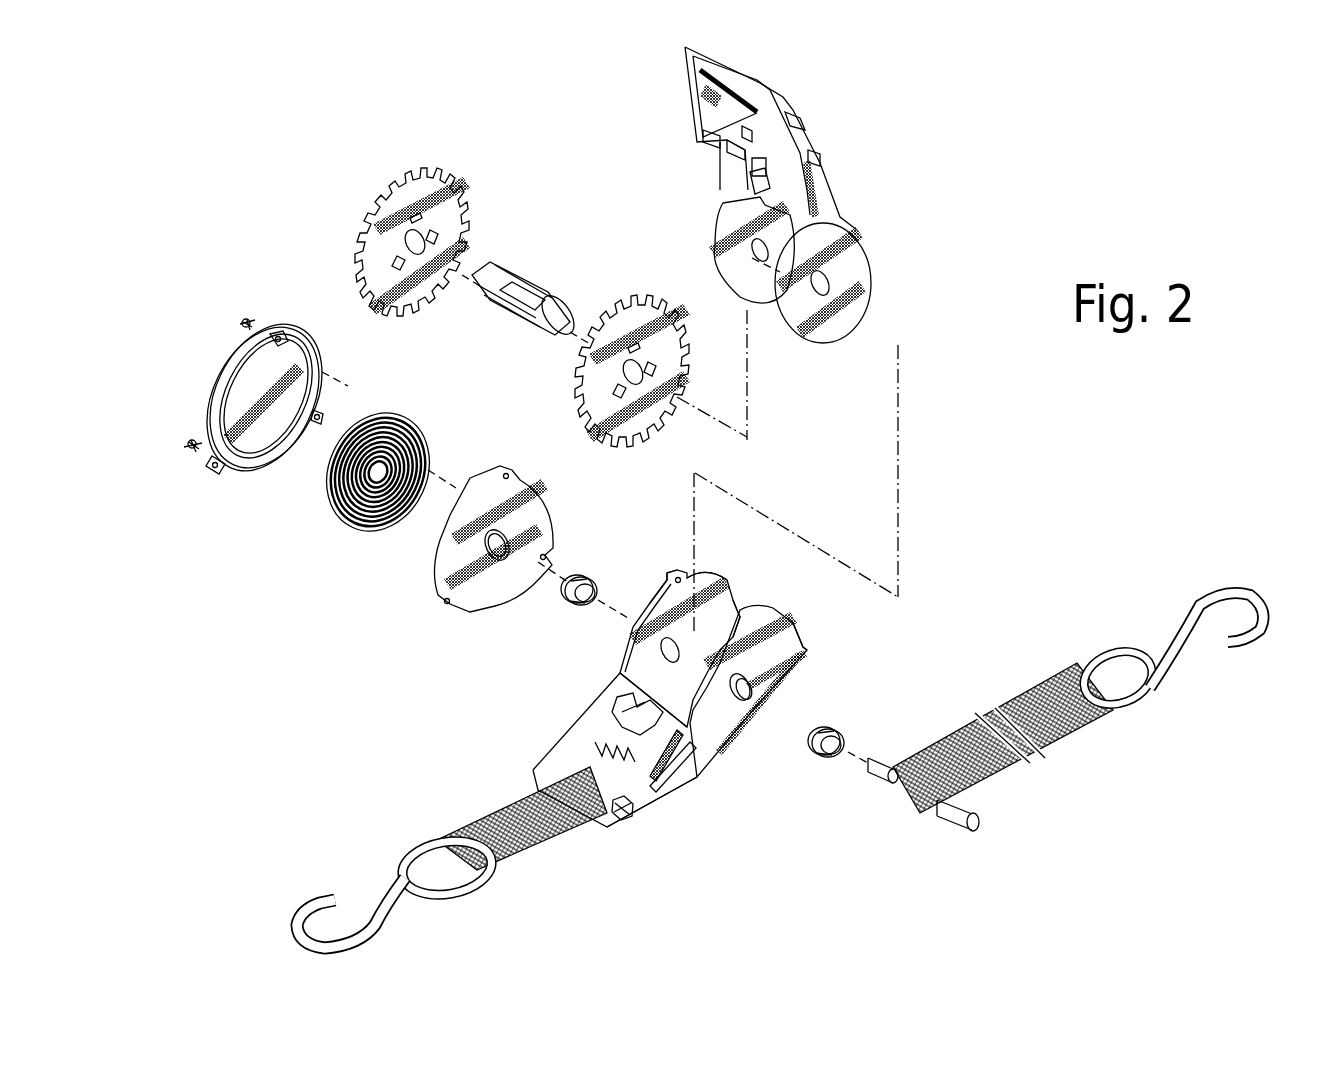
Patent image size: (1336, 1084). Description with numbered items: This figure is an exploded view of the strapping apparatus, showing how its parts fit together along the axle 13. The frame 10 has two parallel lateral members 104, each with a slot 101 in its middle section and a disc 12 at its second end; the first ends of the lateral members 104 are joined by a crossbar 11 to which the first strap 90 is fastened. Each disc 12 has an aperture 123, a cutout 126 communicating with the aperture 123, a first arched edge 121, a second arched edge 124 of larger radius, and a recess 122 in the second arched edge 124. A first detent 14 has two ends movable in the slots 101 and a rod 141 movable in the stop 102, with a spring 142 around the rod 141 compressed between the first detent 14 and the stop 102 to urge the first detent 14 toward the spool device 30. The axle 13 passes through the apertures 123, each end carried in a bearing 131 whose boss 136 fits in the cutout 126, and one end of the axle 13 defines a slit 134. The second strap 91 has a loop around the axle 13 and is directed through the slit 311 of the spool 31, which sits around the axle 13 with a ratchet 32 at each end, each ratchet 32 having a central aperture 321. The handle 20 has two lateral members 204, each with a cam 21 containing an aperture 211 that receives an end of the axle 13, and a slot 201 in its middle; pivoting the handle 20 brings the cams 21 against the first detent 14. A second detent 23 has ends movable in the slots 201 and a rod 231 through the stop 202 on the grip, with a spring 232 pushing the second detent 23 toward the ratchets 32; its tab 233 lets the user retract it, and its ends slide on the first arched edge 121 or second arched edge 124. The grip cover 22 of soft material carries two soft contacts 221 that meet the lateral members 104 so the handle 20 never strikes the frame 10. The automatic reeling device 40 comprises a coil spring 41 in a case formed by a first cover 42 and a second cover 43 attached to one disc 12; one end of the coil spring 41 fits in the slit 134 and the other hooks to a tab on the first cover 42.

The frame 10 is at (738, 876).
The crossbar 11 is at (604, 832).
The disc 12 is at (780, 700).
The axle 13 is at (950, 822).
The first detent 14 is at (620, 695).
The handle 20 is at (863, 191).
The cam 21 is at (843, 330).
The grip cover 22 is at (757, 77).
The second detent 23 is at (760, 180).
The spool device 30 is at (347, 242).
The spool 31 is at (503, 297).
The ratchet 32 is at (410, 230).
The automatic reeling device 40 is at (225, 365).
The coil spring 41 is at (343, 513).
The first cover 42 is at (227, 407).
The second cover 43 is at (467, 563).
The first strap 90 is at (518, 850).
The second strap 91 is at (1050, 697).
The slot 101 is at (660, 776).
The stop 102 is at (603, 757).
The lateral member 104 is at (700, 772).
The first arched edge 121 is at (656, 606).
The recess 122 is at (740, 612).
The aperture 123 is at (803, 647).
The second arched edge 124 is at (698, 570).
The cutout 126 is at (750, 700).
The bearing 131 is at (567, 597).
The slit 134 is at (887, 767).
The boss 136 is at (582, 607).
The rod 141 is at (603, 805).
The spring 142 is at (620, 770).
The slot 201 is at (760, 257).
The stop 202 is at (748, 132).
The lateral member 204 is at (727, 140).
The aperture 211 is at (830, 283).
The soft contact 221 is at (727, 140).
The rod 231 is at (793, 112).
The spring 232 is at (768, 166).
The tab 233 is at (817, 157).
The slit 311 is at (510, 307).
The aperture 321 is at (412, 242).